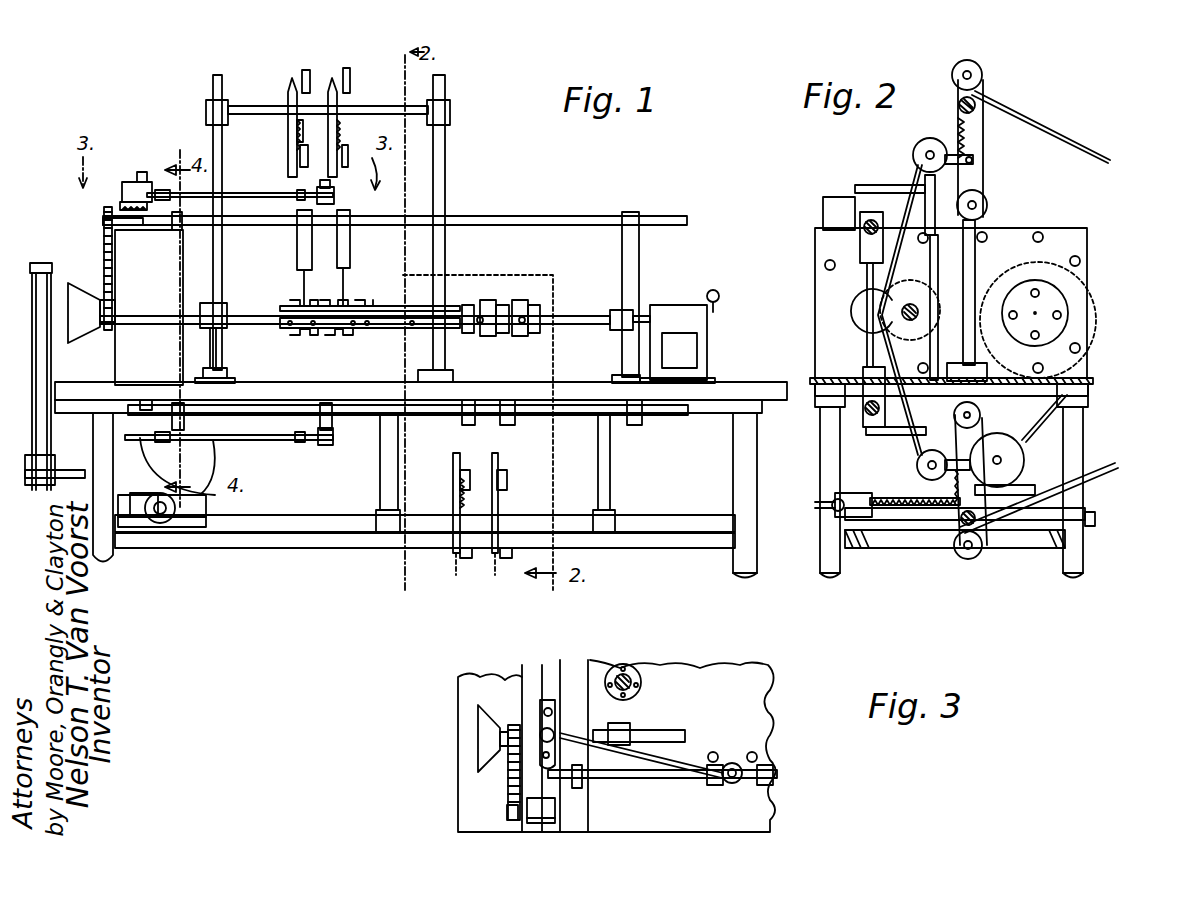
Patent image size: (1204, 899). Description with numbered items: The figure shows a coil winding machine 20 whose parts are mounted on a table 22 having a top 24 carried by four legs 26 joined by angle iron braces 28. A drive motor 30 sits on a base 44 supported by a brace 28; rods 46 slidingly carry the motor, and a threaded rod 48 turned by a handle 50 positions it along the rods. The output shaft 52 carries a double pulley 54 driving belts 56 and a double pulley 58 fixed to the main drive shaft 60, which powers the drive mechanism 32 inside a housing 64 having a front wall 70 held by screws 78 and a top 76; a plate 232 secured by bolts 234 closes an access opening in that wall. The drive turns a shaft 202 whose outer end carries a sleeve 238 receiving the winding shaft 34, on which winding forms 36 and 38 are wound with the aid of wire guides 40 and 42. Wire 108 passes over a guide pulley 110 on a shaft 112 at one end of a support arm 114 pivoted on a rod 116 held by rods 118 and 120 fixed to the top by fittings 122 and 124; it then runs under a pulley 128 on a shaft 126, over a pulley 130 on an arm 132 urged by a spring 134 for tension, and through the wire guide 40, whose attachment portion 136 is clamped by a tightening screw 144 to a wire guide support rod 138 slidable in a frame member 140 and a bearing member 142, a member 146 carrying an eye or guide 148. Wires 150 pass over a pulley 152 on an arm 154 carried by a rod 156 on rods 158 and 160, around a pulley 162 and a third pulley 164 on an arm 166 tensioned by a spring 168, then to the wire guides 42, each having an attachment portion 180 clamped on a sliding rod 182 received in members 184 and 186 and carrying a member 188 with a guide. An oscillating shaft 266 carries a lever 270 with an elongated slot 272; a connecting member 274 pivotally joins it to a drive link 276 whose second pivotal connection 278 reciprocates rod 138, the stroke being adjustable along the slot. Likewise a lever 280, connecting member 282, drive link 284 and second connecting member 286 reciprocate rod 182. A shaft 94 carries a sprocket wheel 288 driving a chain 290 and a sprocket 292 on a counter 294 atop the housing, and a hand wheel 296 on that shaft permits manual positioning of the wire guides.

In FIG. 1, the coil winding machine 20 is at (303, 522).
In FIG. 1, the table 22 is at (733, 380).
In FIG. 1, the table top 24 is at (720, 392).
In FIG. 2, the table top 24 is at (1093, 380).
In FIG. 3, the table top 24 is at (748, 698).
In FIG. 1, the legs 26 is at (746, 474).
In FIG. 2, the legs 26 is at (1084, 556).
In FIG. 1, the angle iron braces 28 is at (330, 547).
In FIG. 2, the angle iron braces 28 is at (850, 552).
In FIG. 1, the drive motor 30 is at (215, 476).
In FIG. 2, the drive motor 30 is at (1011, 462).
In FIG. 1, the drive mechanism 32 is at (133, 266).
In FIG. 1, the winding shaft 34 is at (396, 316).
In FIG. 2, the winding shaft 34 is at (908, 292).
In FIG. 3, the winding shaft 34 is at (673, 732).
In FIG. 1, the winding form 36 is at (344, 295).
In FIG. 1, the winding form 38 is at (500, 300).
In FIG. 2, the winding form 38 is at (865, 300).
In FIG. 1, the wire guide 40 is at (354, 241).
In FIG. 1, the wire guide 42 is at (530, 372).
In FIG. 1, the base 44 is at (226, 573).
In FIG. 2, the base 44 is at (1091, 518).
In FIG. 2, the rods 46 is at (925, 540).
In FIG. 2, the threaded rod 48 is at (885, 536).
In FIG. 1, the handle 50 is at (160, 518).
In FIG. 2, the handle 50 is at (835, 503).
In FIG. 1, the output shaft 52 is at (70, 458).
In FIG. 1, the double pulley 54 is at (50, 483).
In FIG. 1, the belts 56 is at (52, 425).
In FIG. 2, the belts 56 is at (1031, 440).
In FIG. 1, the double pulley 58 is at (42, 368).
In FIG. 2, the double pulley 58 is at (1069, 325).
In FIG. 1, the main drive shaft 60 is at (70, 285).
In FIG. 3, the housing 64 is at (553, 680).
In FIG. 1, the front wall 70 is at (184, 270).
In FIG. 2, the front wall 70 is at (1088, 240).
In FIG. 3, the front wall 70 is at (590, 665).
In FIG. 3, the top 76 is at (565, 672).
In FIG. 2, the screws 78 is at (1086, 260).
In FIG. 1, the shaft 94 is at (113, 310).
In FIG. 2, the wire 108 is at (1035, 130).
In FIG. 1, the guide pulley 110 is at (305, 70).
In FIG. 2, the guide pulley 110 is at (978, 68).
In FIG. 2, the shaft 112 is at (983, 75).
In FIG. 1, the support arm 114 is at (290, 92).
In FIG. 2, the support arm 114 is at (976, 140).
In FIG. 1, the rod 116 is at (370, 108).
In FIG. 2, the rod 116 is at (959, 105).
In FIG. 1, the rod 118 is at (212, 92).
In FIG. 2, the rod 118 is at (977, 236).
In FIG. 3, the rod 118 is at (623, 668).
In FIG. 1, the rod 120 is at (446, 160).
In FIG. 2, the rod 120 is at (1086, 235).
In FIG. 1, the fitting 122 is at (236, 378).
In FIG. 3, the fitting 122 is at (640, 672).
In FIG. 1, the fitting 124 is at (372, 332).
In FIG. 2, the fitting 124 is at (1091, 340).
In FIG. 2, the shaft 126 is at (988, 203).
In FIG. 2, the pulley 128 is at (981, 215).
In FIG. 1, the pulley 130 is at (446, 140).
In FIG. 2, the pulley 130 is at (914, 158).
In FIG. 1, the arm 132 is at (297, 140).
In FIG. 2, the arm 132 is at (950, 135).
In FIG. 1, the spring 134 is at (451, 112).
In FIG. 2, the spring 134 is at (950, 160).
In FIG. 1, the attachment portion 136 is at (297, 238).
In FIG. 2, the attachment portion 136 is at (857, 245).
In FIG. 1, the wire guide support rod 138 is at (545, 217).
In FIG. 2, the wire guide support rod 138 is at (855, 220).
In FIG. 3, the wire guide support rod 138 is at (800, 771).
In FIG. 1, the frame member 140 is at (641, 249).
In FIG. 1, the bearing member 142 is at (145, 222).
In FIG. 3, the bearing member 142 is at (606, 777).
In FIG. 1, the tightening screw 144 is at (300, 214).
In FIG. 1, the member 146 is at (300, 262).
In FIG. 2, the member 146 is at (865, 265).
In FIG. 3, the eye or guide 148 is at (779, 748).
In FIG. 2, the wires 150 is at (1106, 479).
In FIG. 1, the pulley 152 is at (470, 556).
In FIG. 2, the pulley 152 is at (986, 548).
In FIG. 1, the arm 154 is at (455, 481).
In FIG. 2, the arm 154 is at (962, 558).
In FIG. 1, the rod 156 is at (395, 522).
In FIG. 2, the rod 156 is at (962, 562).
In FIG. 1, the rod 158 is at (380, 482).
In FIG. 1, the rod 160 is at (612, 480).
In FIG. 2, the pulley 162 is at (981, 412).
In FIG. 1, the third pulley 164 is at (470, 456).
In FIG. 2, the third pulley 164 is at (920, 455).
In FIG. 1, the arm 166 is at (506, 479).
In FIG. 2, the arm 166 is at (917, 470).
In FIG. 1, the spring 168 is at (505, 332).
In FIG. 2, the spring 168 is at (955, 485).
In FIG. 1, the attachment portion 180 is at (762, 395).
In FIG. 2, the attachment portion 180 is at (830, 360).
In FIG. 3, the attachment portion 180 is at (775, 786).
In FIG. 1, the sliding rod 182 is at (573, 415).
In FIG. 2, the sliding rod 182 is at (862, 408).
In FIG. 1, the member 184 is at (642, 426).
In FIG. 1, the member 186 is at (182, 413).
In FIG. 2, the member 188 is at (862, 310).
In FIG. 1, the shaft 202 is at (213, 305).
In FIG. 3, the shaft 202 is at (623, 723).
In FIG. 1, the plate 232 is at (216, 345).
In FIG. 2, the plate 232 is at (1096, 290).
In FIG. 2, the bolts 234 is at (1068, 318).
In FIG. 1, the sleeve 238 is at (228, 312).
In FIG. 3, the sleeve 238 is at (619, 735).
In FIG. 1, the shaft 266 is at (146, 180).
In FIG. 2, the shaft 266 is at (927, 175).
In FIG. 3, the shaft 266 is at (533, 665).
In FIG. 1, the lever 270 is at (108, 220).
In FIG. 2, the lever 270 is at (868, 230).
In FIG. 3, the lever 270 is at (560, 735).
In FIG. 3, the elongated slot 272 is at (545, 757).
In FIG. 1, the connecting member 274 is at (138, 182).
In FIG. 3, the connecting member 274 is at (478, 738).
In FIG. 1, the drive link 276 is at (240, 194).
In FIG. 2, the drive link 276 is at (862, 190).
In FIG. 3, the drive link 276 is at (745, 775).
In FIG. 1, the second pivotal connection 278 is at (336, 200).
In FIG. 2, the second pivotal connection 278 is at (855, 193).
In FIG. 3, the second pivotal connection 278 is at (770, 800).
In FIG. 1, the lever 280 is at (144, 402).
In FIG. 2, the lever 280 is at (935, 400).
In FIG. 1, the connecting member 282 is at (192, 487).
In FIG. 1, the drive link 284 is at (298, 455).
In FIG. 1, the second connecting member 286 is at (331, 439).
In FIG. 3, the sprocket wheel 288 is at (510, 745).
In FIG. 1, the chain 290 is at (105, 218).
In FIG. 3, the chain 290 is at (512, 782).
In FIG. 1, the sprocket 292 is at (118, 203).
In FIG. 3, the sprocket 292 is at (512, 812).
In FIG. 1, the counter 294 is at (120, 185).
In FIG. 2, the counter 294 is at (820, 200).
In FIG. 3, the counter 294 is at (556, 810).
In FIG. 1, the hand wheel 296 is at (105, 322).
In FIG. 3, the hand wheel 296 is at (490, 735).